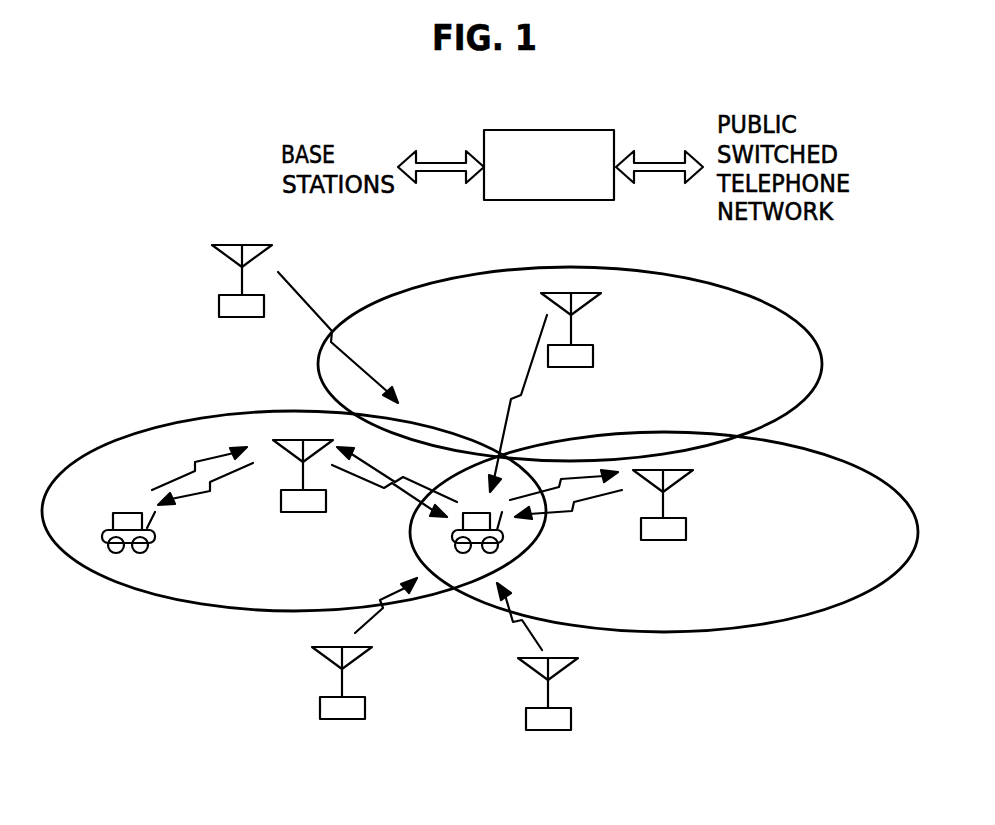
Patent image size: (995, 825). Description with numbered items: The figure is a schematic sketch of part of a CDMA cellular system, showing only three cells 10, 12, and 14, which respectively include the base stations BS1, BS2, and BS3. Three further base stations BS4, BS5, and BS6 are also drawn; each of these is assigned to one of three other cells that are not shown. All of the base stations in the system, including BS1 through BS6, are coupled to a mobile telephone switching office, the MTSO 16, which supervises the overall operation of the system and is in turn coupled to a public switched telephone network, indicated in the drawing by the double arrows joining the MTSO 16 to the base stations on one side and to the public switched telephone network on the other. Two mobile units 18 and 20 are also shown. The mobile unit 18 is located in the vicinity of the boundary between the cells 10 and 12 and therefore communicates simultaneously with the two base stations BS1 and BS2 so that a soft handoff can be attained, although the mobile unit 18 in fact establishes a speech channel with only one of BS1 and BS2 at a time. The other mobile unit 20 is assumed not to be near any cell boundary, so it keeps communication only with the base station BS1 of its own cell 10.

The cell 10 is at (177, 582).
The cell 12 is at (702, 617).
The cell 14 is at (790, 343).
The MTSO (mobile telephone switching office) 16 is at (553, 200).
The mobile unit 18 is at (503, 535).
The mobile unit 20 is at (100, 540).
The base station BS1 is at (290, 510).
The base station BS2 is at (670, 535).
The base station BS3 is at (585, 355).
The base station BS4 is at (341, 712).
The base station BS5 is at (556, 726).
The base station BS6 is at (230, 312).